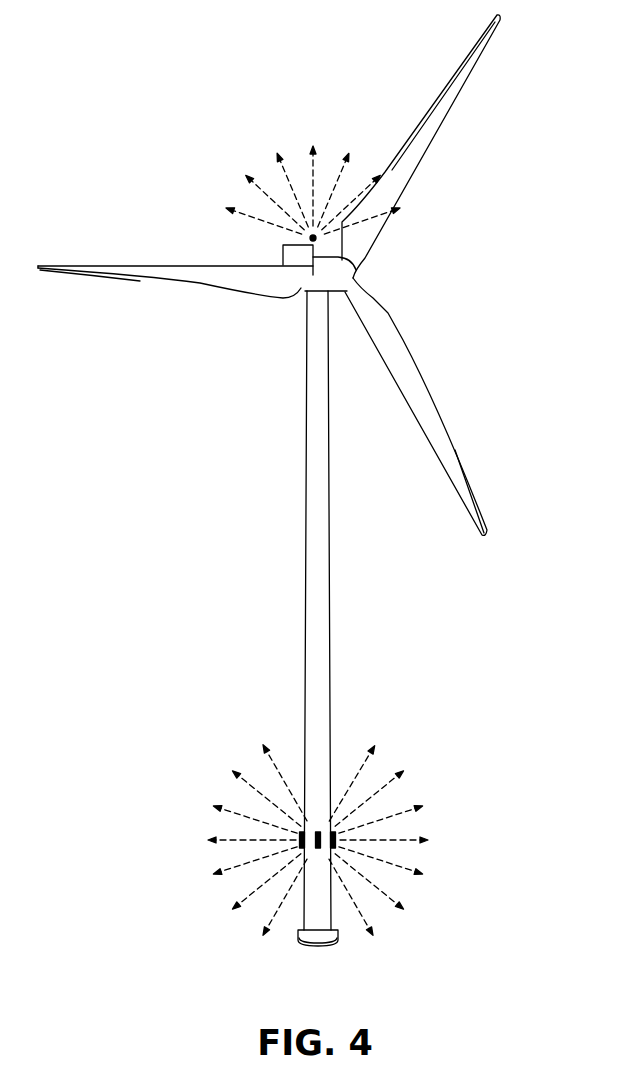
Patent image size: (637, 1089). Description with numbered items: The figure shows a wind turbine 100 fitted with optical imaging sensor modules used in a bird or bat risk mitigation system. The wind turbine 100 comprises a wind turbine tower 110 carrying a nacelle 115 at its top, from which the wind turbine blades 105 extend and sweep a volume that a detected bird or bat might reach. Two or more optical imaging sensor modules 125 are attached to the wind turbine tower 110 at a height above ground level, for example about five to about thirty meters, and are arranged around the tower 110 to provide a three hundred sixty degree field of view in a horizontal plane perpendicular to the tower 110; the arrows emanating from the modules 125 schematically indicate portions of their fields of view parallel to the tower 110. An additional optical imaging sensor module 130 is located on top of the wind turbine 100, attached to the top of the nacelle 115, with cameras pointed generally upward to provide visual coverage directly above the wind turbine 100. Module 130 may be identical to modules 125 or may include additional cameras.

The wind turbine 100 is at (119, 205).
The wind turbine blades 105 is at (405, 345).
The wind turbine tower 110 is at (306, 538).
The nacelle 115 is at (282, 254).
The optical imaging sensor modules 125 is at (319, 830).
The additional optical imaging sensor module 130 is at (300, 236).